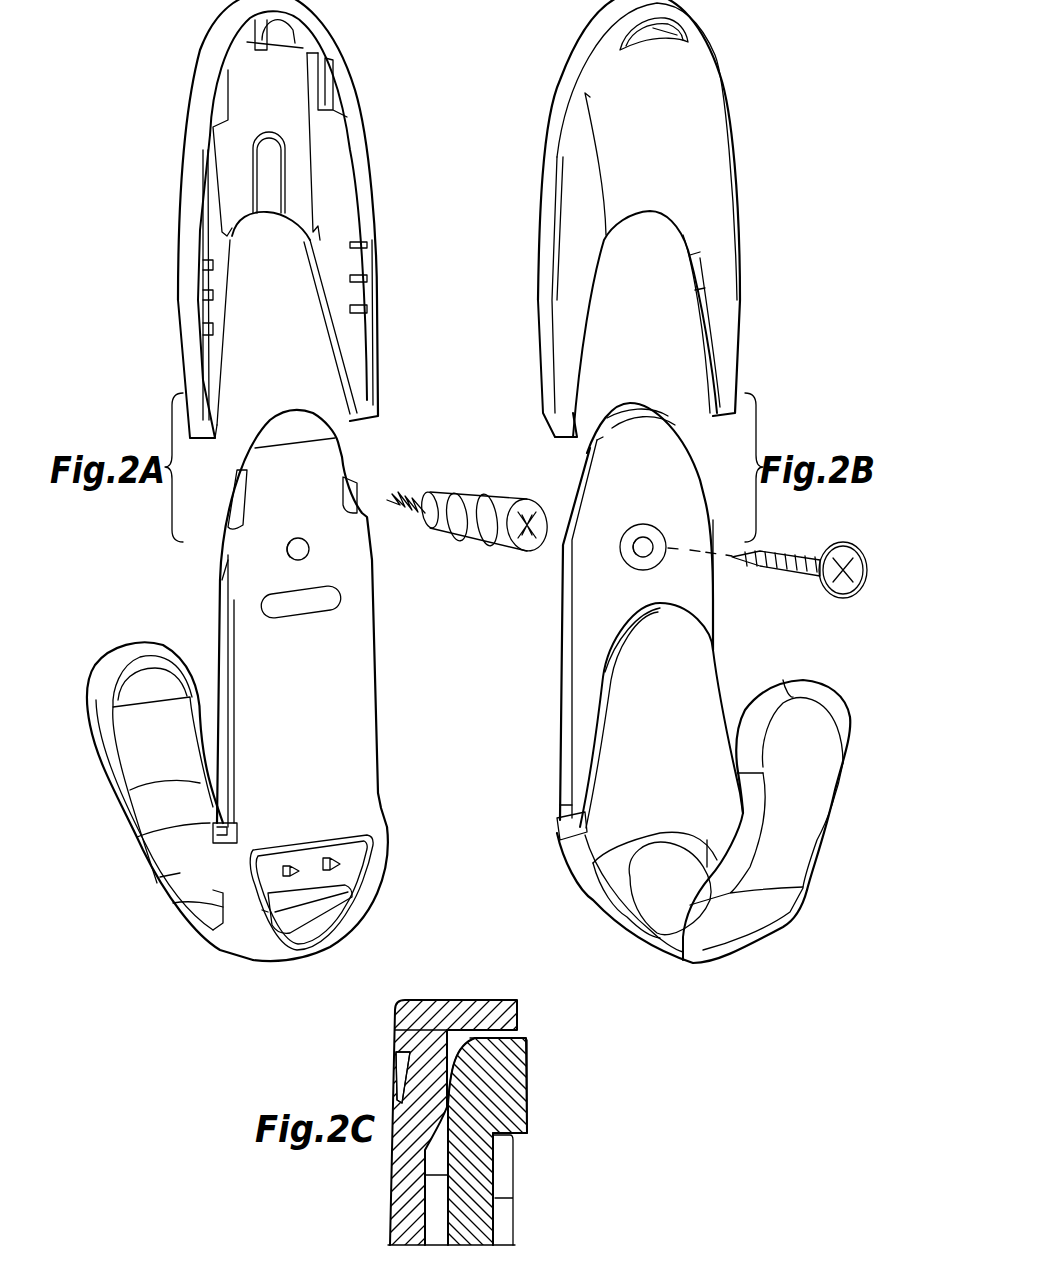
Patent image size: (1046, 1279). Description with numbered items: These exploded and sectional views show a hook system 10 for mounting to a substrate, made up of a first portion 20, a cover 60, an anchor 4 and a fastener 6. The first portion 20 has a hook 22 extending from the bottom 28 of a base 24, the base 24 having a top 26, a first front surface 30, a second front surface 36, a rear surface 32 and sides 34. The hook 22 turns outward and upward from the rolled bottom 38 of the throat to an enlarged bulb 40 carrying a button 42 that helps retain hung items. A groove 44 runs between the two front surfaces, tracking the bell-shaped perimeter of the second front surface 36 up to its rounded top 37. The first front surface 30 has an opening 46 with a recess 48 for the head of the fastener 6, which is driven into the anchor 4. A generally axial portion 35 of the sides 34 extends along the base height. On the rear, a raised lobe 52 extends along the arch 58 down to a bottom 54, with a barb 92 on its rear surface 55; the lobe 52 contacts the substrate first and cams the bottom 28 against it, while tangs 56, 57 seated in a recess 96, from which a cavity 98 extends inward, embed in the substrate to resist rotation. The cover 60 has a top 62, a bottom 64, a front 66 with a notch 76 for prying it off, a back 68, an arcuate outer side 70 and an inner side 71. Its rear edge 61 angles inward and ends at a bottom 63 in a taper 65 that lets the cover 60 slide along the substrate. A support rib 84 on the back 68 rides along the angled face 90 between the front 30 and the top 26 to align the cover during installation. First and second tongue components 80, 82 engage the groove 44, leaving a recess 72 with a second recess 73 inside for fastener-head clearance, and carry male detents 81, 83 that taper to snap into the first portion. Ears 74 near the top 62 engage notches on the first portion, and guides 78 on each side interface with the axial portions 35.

In FIG. 2A, the anchor 4 is at (445, 492).
In FIG. 2B, the fastener 6 is at (847, 553).
In FIG. 2A, the hook system 10 is at (395, 432).
In FIG. 2B, the hook system 10 is at (793, 407).
In FIG. 2A, the first portion 20 is at (130, 893).
In FIG. 2B, the first portion 20 is at (550, 780).
In FIG. 2C, the first portion 20 is at (522, 1207).
In FIG. 2B, the hook 22 is at (803, 853).
In FIG. 2B, the base 24 is at (700, 583).
In FIG. 2A, the top 26 is at (292, 413).
In FIG. 2C, the top 26 is at (517, 1034).
In FIG. 2A, the bottom 28 is at (273, 960).
In FIG. 2B, the first front surface 30 is at (667, 473).
In FIG. 2A, the rear surface 32 is at (360, 600).
In FIG. 2A, the sides 34 is at (220, 583).
In FIG. 2B, the generally axial portion 35 is at (560, 670).
In FIG. 2B, the second front surface 36 is at (697, 677).
In FIG. 2B, the top of second front surface 37 is at (667, 603).
In FIG. 2B, the bottom of throat 38 is at (660, 887).
In FIG. 2B, the bulb 40 is at (822, 723).
In FIG. 2A, the button 42 is at (125, 673).
In FIG. 2A, the groove 44 is at (140, 837).
In FIG. 2A, the opening 46 is at (310, 550).
In FIG. 2B, the recess 48 is at (627, 567).
In FIG. 2C, the raised lobe 52 is at (528, 1070).
In FIG. 2C, the bottom 54 is at (517, 1137).
In FIG. 2C, the rear surface 55 is at (528, 1100).
In FIG. 2A, the tang 56 is at (287, 873).
In FIG. 2A, the tang 57 is at (340, 857).
In FIG. 2B, the arch 58 is at (673, 420).
In FIG. 2A, the cover 60 is at (192, 36).
In FIG. 2B, the cover 60 is at (570, 28).
In FIG. 2C, the cover 60 is at (385, 1207).
In FIG. 2A, the rear edge 61 is at (197, 358).
In FIG. 2C, the top 62 is at (457, 1000).
In FIG. 2A, the bottom of rear edge 63 is at (212, 423).
In FIG. 2B, the bottom 64 is at (558, 440).
In FIG. 2A, the taper 65 is at (217, 447).
In FIG. 2B, the front 66 is at (660, 115).
In FIG. 2A, the back 68 is at (252, 102).
In FIG. 2B, the outer side 70 is at (580, 63).
In FIG. 2B, the inner side 71 is at (660, 215).
In FIG. 2A, the recess 72 is at (302, 158).
In FIG. 2A, the second recess 73 is at (260, 180).
In FIG. 2A, the ears 74 is at (340, 98).
In FIG. 2B, the notch 76 is at (680, 33).
In FIG. 2A, the guides 78 is at (356, 308).
In FIG. 2A, the first tongue component 80 is at (313, 292).
In FIG. 2A, the male detent 81 is at (310, 277).
In FIG. 2A, the second tongue component 82 is at (225, 343).
In FIG. 2B, the male detent 83 is at (700, 297).
In FIG. 2A, the support rib 84 is at (264, 47).
In FIG. 2C, the support rib 84 is at (445, 1107).
In FIG. 2C, the angled face 90 is at (460, 1053).
In FIG. 2C, the barb 92 is at (528, 1130).
In FIG. 2A, the recess 96 is at (353, 877).
In FIG. 2A, the cavity 98 is at (323, 930).